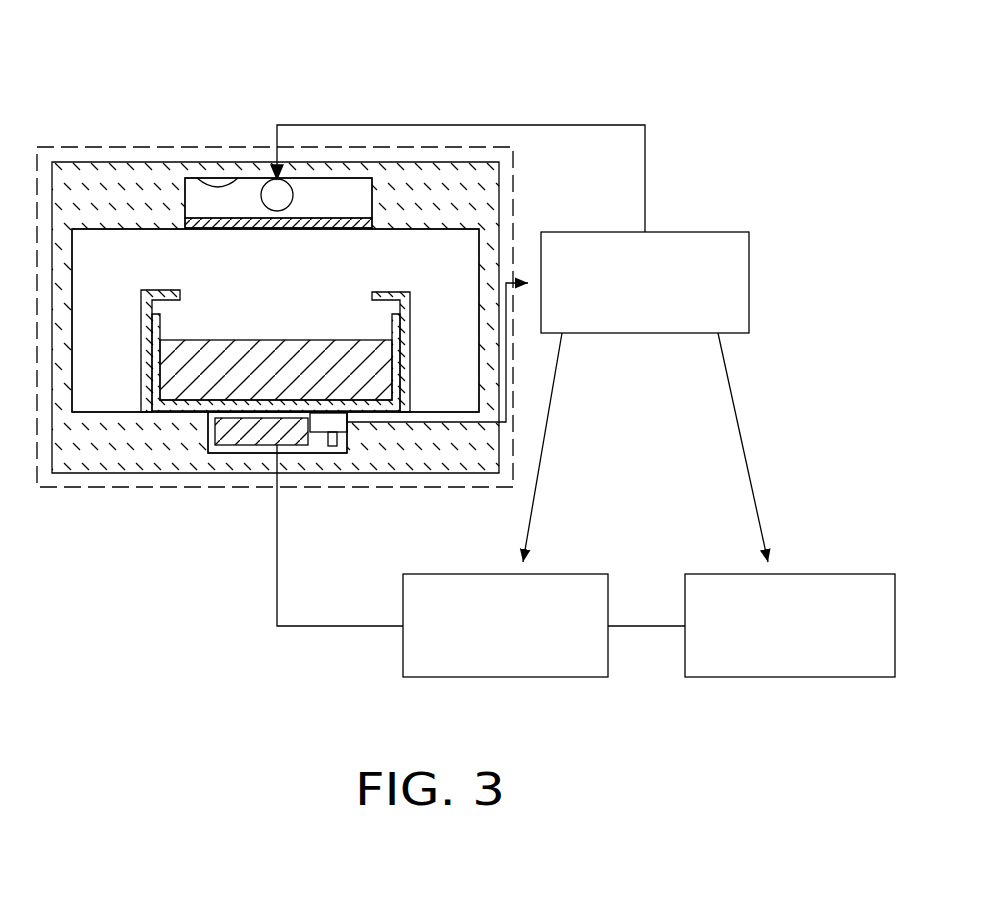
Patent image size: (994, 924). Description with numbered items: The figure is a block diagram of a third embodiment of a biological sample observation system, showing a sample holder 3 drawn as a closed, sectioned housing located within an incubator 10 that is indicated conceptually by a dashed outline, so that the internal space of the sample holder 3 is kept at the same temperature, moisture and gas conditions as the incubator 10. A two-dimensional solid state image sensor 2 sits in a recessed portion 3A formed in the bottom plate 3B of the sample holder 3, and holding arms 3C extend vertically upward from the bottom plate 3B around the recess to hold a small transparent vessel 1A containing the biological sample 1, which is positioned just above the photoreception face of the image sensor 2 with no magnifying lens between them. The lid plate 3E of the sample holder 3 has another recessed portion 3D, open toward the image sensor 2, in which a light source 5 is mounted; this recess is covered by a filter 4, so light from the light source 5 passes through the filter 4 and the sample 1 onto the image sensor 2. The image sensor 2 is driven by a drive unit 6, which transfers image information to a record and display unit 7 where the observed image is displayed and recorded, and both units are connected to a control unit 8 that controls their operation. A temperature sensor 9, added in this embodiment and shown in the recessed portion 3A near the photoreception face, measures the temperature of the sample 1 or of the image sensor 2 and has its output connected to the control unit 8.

The biological sample 1 is at (278, 375).
The transparent vessel 1A is at (162, 332).
The solid state image sensor 2 is at (245, 450).
The sample holder 3 is at (76, 173).
The recessed portion 3A is at (212, 438).
The bottom plate 3B is at (125, 430).
The holding arms 3C is at (400, 345).
The recessed portion 3D is at (197, 178).
The lid plate 3E is at (158, 200).
The filter 4 is at (337, 218).
The light source 5 is at (289, 184).
The drive unit 6 is at (543, 577).
The record and display unit 7 is at (852, 574).
The control unit 8 is at (749, 285).
The temperature sensor 9 is at (333, 435).
The incubator 10 is at (513, 203).